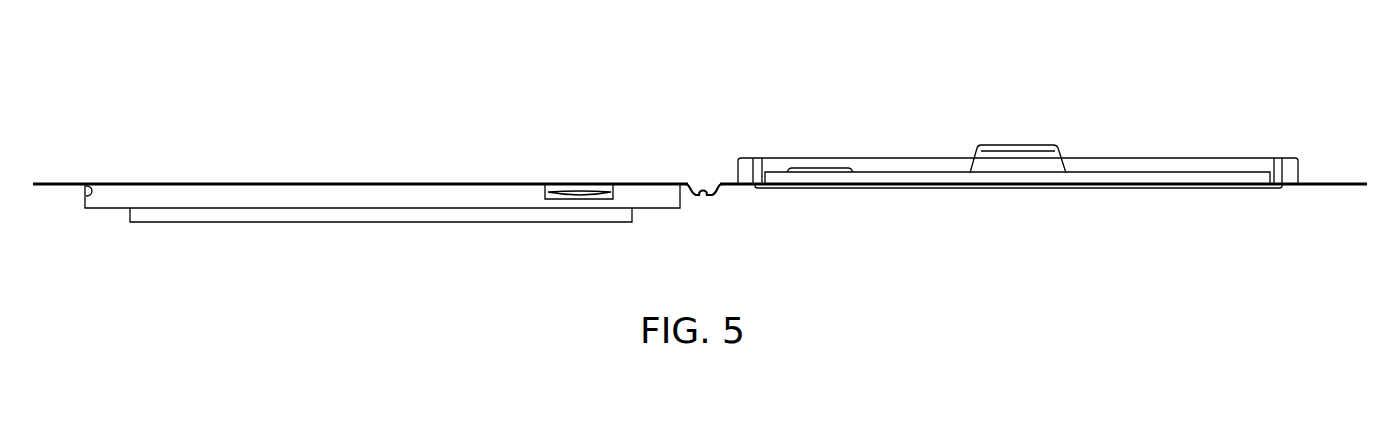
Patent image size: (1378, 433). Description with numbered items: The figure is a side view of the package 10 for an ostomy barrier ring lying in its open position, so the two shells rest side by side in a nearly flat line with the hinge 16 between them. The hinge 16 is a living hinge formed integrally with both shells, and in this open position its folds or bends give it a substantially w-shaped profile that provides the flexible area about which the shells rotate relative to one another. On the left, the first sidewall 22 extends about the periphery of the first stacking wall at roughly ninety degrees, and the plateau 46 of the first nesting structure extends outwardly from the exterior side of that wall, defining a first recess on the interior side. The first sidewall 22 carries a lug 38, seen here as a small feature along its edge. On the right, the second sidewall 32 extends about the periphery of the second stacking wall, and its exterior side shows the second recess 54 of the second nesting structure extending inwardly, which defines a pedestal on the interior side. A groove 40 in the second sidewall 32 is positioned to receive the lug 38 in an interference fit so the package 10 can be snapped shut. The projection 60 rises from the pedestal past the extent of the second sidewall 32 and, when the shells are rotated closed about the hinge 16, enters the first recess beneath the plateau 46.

The package 10 is at (78, 88).
The hinge 16 is at (707, 197).
The first sidewall 22 is at (100, 200).
The second sidewall 32 is at (1176, 168).
The lug 38 is at (583, 190).
The groove 40 is at (809, 181).
The plateau 46 is at (167, 223).
The second recess 54 is at (1075, 188).
The projection 60 is at (997, 148).